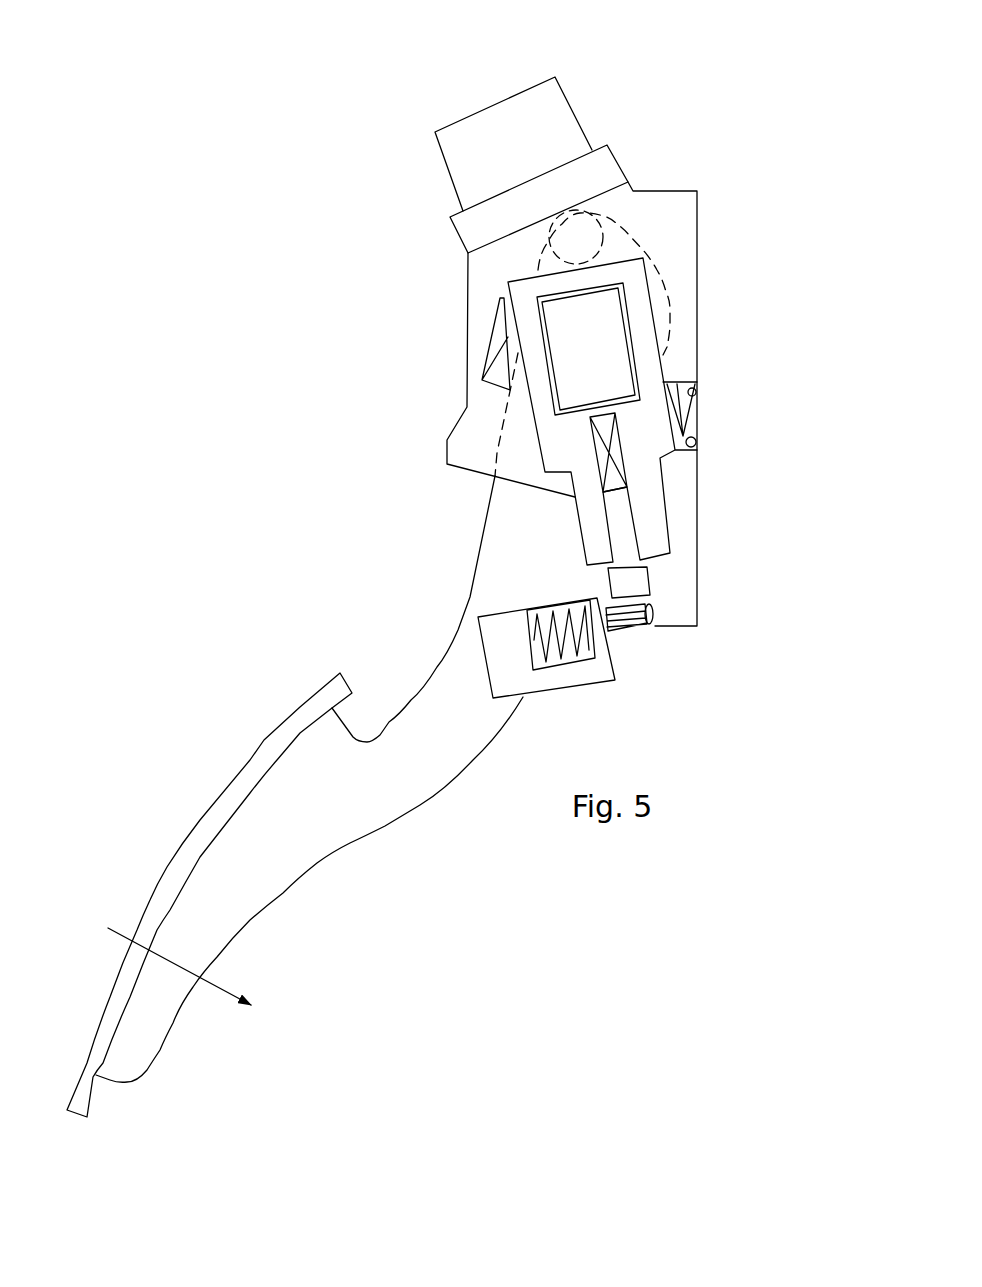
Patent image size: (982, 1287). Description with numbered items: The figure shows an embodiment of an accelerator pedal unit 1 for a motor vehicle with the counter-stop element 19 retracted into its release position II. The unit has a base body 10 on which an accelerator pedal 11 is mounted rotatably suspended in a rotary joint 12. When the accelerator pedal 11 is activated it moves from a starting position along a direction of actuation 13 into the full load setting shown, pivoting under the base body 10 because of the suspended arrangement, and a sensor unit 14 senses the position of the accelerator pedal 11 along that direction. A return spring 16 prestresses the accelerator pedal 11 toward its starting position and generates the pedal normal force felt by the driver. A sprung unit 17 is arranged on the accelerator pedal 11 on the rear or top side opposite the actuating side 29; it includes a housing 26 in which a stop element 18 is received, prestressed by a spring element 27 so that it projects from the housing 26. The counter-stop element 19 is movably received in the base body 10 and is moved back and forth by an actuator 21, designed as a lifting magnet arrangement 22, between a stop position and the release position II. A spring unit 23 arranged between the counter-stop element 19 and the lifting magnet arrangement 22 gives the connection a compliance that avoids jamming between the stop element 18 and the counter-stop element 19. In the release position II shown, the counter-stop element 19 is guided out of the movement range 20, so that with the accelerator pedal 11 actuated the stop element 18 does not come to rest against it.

The accelerator pedal unit 1 is at (335, 315).
The base body 10 is at (690, 236).
The accelerator pedal 11 is at (200, 820).
The rotary joint 12 is at (569, 232).
The direction of actuation 13 is at (187, 977).
The sensor unit 14 is at (486, 341).
The return spring 16 is at (690, 416).
The sprung unit 17 is at (577, 694).
The stop element 18 is at (632, 632).
The counter-stop element 19 is at (642, 582).
The movement range 20 is at (655, 637).
The actuator 21 is at (632, 245).
The lifting magnet arrangement 22 is at (612, 320).
The spring unit 23 is at (616, 452).
The housing 26 is at (503, 613).
The spring element 27 is at (543, 617).
The actuating side 29 is at (165, 875).
The release position II is at (660, 571).